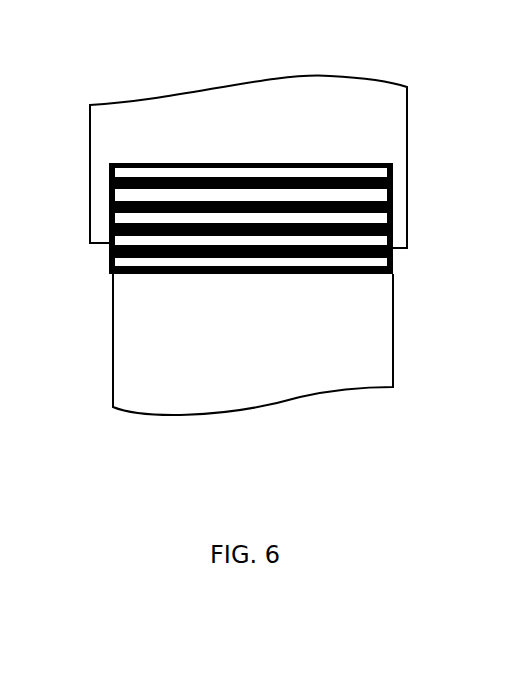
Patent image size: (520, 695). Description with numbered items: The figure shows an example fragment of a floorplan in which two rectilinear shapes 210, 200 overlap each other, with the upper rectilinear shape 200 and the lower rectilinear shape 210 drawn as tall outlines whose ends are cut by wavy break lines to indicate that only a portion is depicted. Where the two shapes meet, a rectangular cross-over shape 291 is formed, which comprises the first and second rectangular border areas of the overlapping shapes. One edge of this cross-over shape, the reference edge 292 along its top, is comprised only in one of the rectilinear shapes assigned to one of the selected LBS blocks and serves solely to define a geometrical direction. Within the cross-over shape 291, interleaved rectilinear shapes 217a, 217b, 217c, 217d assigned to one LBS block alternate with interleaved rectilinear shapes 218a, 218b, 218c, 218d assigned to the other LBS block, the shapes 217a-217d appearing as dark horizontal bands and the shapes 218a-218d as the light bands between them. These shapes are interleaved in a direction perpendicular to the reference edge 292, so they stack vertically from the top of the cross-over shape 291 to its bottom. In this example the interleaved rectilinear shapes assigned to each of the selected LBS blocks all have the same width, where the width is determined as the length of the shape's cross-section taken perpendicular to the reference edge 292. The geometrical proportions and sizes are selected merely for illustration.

The rectilinear shape 200 is at (190, 88).
The rectilinear shape 210 is at (266, 420).
The cross-over shape 291 is at (112, 284).
The reference edge 292 is at (113, 163).
The interleaved rectilinear shape 217a is at (110, 185).
The interleaved rectilinear shape 217b is at (110, 208).
The interleaved rectilinear shape 217c is at (110, 230).
The interleaved rectilinear shape 217d is at (110, 252).
The interleaved rectilinear shape 218a is at (393, 173).
The interleaved rectilinear shape 218b is at (393, 195).
The interleaved rectilinear shape 218c is at (393, 216).
The interleaved rectilinear shape 218d is at (393, 236).